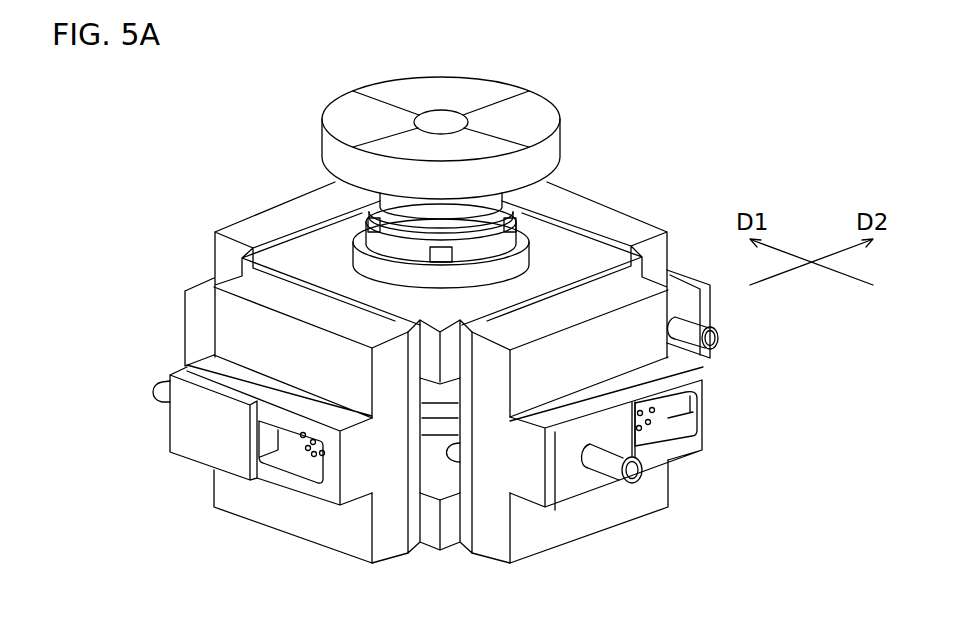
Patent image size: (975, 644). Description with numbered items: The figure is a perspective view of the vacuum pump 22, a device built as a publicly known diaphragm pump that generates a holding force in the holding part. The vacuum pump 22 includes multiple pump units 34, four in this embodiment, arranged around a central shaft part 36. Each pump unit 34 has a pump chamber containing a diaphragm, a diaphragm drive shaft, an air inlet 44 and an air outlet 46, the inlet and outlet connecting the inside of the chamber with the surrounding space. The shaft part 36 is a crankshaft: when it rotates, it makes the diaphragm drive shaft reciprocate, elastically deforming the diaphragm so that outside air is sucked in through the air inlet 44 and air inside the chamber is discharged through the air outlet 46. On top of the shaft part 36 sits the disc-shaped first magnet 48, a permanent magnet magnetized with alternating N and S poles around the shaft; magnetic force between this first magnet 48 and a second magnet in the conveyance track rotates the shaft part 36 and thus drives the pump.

The vacuum pump 22 is at (455, 626).
The pump unit 34 is at (278, 201).
The shaft part 36 is at (526, 210).
The air inlet 44 is at (645, 480).
The air outlet 46 is at (663, 417).
The first magnet 48 is at (523, 91).